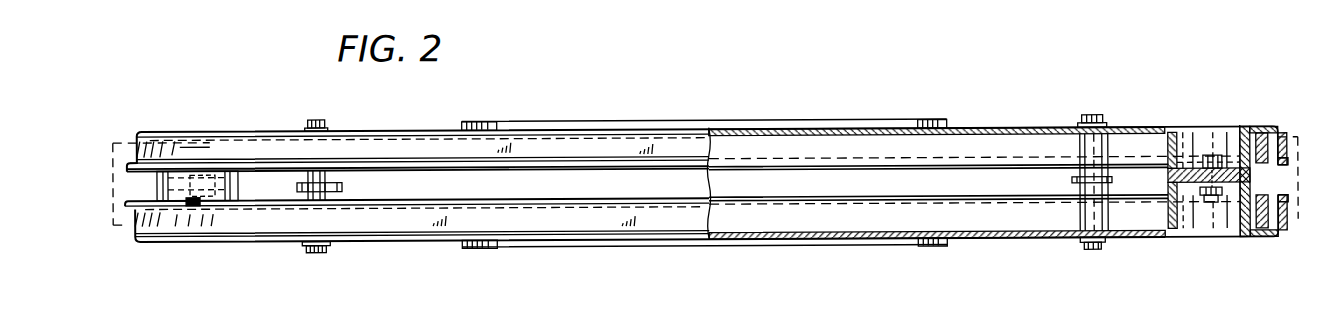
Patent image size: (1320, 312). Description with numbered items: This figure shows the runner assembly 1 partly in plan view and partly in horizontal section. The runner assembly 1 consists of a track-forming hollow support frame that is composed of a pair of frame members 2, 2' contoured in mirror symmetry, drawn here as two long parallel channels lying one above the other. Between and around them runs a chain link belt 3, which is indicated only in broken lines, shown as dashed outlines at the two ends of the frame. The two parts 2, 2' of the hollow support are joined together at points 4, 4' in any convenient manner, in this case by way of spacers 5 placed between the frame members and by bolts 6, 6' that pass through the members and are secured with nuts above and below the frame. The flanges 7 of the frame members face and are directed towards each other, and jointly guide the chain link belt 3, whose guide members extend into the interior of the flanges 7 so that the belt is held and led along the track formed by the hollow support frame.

The runner assembly 1 is at (1000, 264).
The frame member 2 is at (682, 244).
The frame member 2' is at (683, 131).
The chain link belt 3 is at (116, 167).
The joint 4 is at (698, 151).
The joint 4' is at (739, 235).
The spacer 5 is at (338, 178).
The bolt 6 is at (717, 243).
The bolt 6' is at (694, 270).
The flange 7 is at (562, 201).